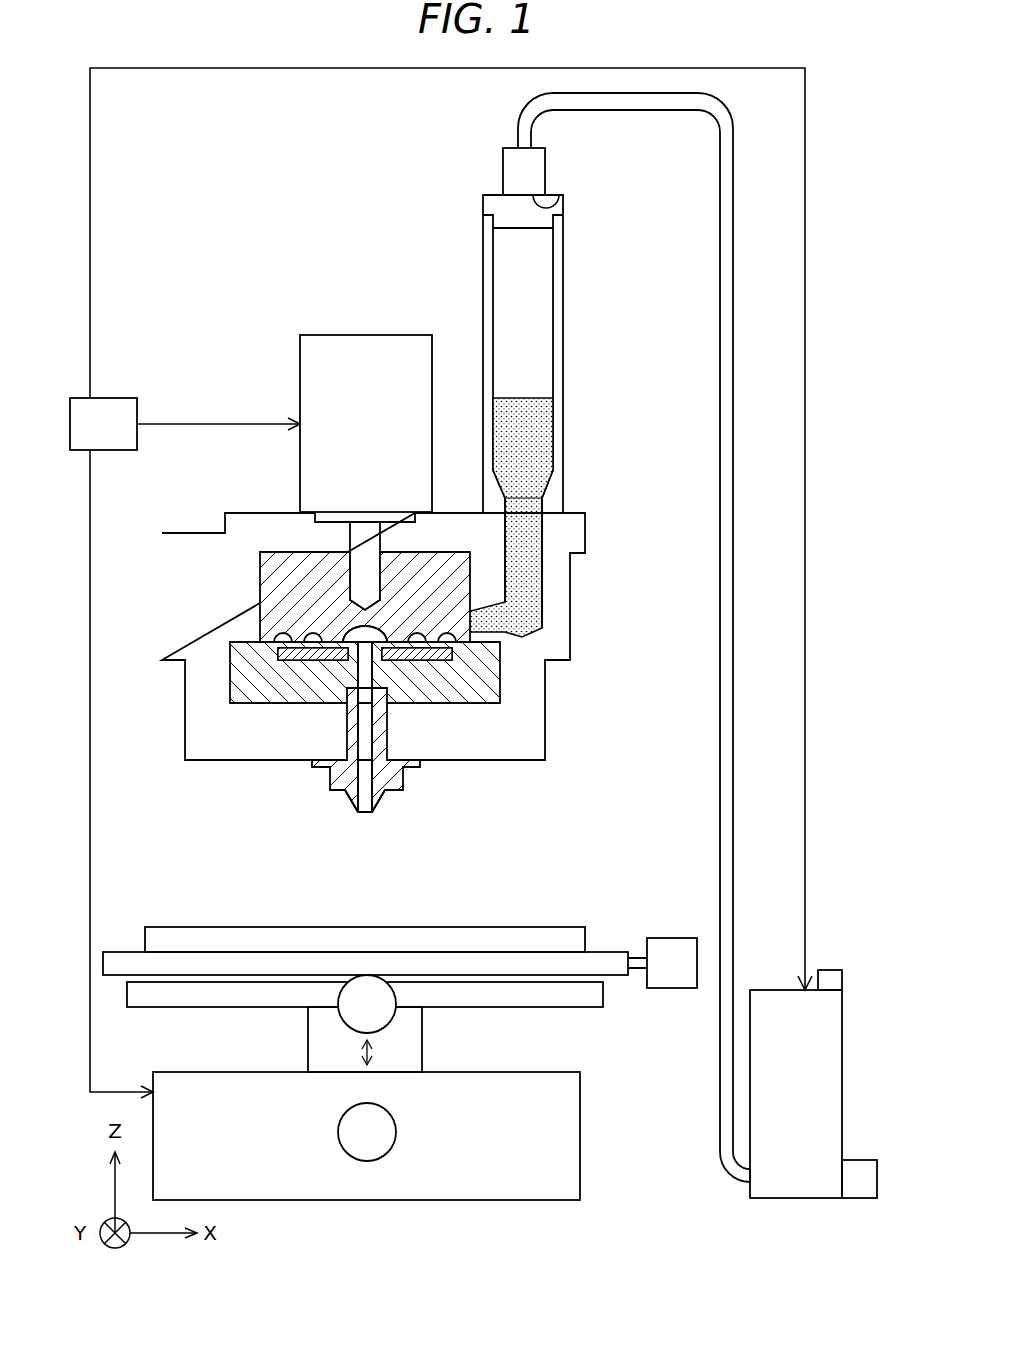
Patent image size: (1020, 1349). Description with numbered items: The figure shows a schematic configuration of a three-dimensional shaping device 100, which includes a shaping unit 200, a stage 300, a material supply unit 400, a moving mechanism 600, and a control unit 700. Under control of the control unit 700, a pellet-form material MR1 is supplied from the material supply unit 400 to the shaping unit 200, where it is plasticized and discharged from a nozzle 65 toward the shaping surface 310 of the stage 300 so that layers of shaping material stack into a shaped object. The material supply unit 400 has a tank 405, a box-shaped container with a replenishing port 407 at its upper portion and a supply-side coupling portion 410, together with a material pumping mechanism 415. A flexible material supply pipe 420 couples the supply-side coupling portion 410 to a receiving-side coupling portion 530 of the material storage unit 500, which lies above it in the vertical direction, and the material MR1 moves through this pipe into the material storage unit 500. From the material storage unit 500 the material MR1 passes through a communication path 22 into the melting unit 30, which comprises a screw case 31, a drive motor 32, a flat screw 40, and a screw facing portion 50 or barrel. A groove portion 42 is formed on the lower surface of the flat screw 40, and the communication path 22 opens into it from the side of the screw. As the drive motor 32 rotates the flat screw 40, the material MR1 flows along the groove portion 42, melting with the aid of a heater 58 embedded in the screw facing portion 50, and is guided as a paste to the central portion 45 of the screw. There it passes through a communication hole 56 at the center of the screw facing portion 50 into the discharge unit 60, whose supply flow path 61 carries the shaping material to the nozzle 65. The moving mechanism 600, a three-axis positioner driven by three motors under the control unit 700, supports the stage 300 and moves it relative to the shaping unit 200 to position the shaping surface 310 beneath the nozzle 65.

The three-dimensional shaping device 100 is at (183, 250).
The shaping unit 200 is at (190, 325).
The communication path 22 is at (522, 570).
The melting unit 30 is at (278, 350).
The screw case 31 is at (183, 533).
The drive motor 32 is at (300, 362).
The flat screw 40 is at (275, 552).
The groove portion 42 is at (353, 640).
The central portion 45 is at (370, 630).
The screw facing portion 50 is at (463, 685).
The communication hole 56 is at (360, 702).
The heater 58 is at (300, 664).
The discharge unit 60 is at (245, 812).
The supply flow path 61 is at (365, 718).
The nozzle 65 is at (352, 798).
The stage 300 is at (618, 950).
The shaping surface 310 is at (540, 927).
The material supply unit 400 is at (781, 978).
The tank 405 is at (762, 1107).
The replenishing port 407 is at (824, 975).
The supply-side coupling portion 410 is at (752, 1178).
The material pumping mechanism 415 is at (862, 1188).
The material supply pipe 420 is at (720, 290).
The material storage unit 500 is at (410, 155).
The receiving-side coupling portion 530 is at (557, 190).
The material MR1 is at (522, 440).
The moving mechanism 600 is at (598, 1040).
The control unit 700 is at (100, 397).